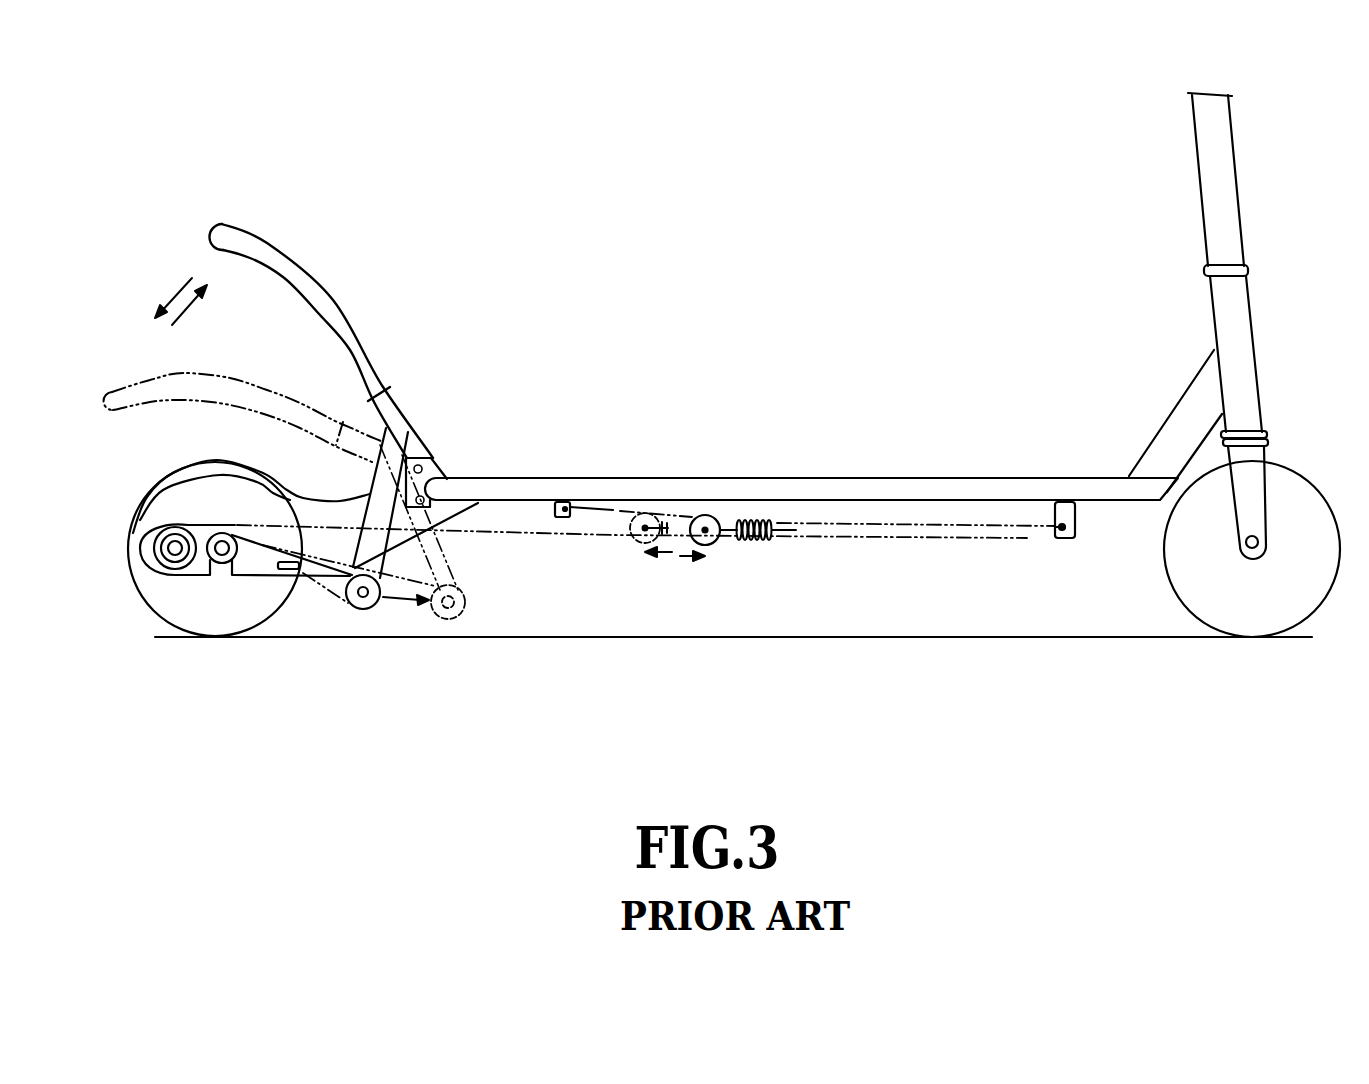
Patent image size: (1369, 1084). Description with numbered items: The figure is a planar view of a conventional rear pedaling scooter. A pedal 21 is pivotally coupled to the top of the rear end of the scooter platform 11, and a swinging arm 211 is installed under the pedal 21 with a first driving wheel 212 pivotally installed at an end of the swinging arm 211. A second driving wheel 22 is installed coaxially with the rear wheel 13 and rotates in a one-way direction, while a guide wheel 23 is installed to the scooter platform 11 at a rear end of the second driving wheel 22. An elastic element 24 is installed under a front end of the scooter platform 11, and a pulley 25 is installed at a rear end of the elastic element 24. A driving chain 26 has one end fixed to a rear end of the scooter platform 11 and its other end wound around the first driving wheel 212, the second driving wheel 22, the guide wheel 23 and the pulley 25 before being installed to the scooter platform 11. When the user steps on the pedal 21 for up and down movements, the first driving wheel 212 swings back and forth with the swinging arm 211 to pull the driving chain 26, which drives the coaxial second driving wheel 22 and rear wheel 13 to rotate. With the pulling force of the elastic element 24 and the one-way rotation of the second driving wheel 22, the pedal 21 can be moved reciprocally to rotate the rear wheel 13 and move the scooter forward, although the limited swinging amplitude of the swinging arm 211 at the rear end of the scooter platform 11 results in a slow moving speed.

The scooter platform 11 is at (692, 483).
The rear wheel 13 is at (172, 605).
The pedal 21 is at (316, 285).
The swinging arm 211 is at (386, 588).
The first driving wheel 212 is at (362, 610).
The second driving wheel 22 is at (219, 565).
The guide wheel 23 is at (158, 563).
The elastic element 24 is at (757, 542).
The pulley 25 is at (663, 547).
The driving chain 26 is at (327, 587).